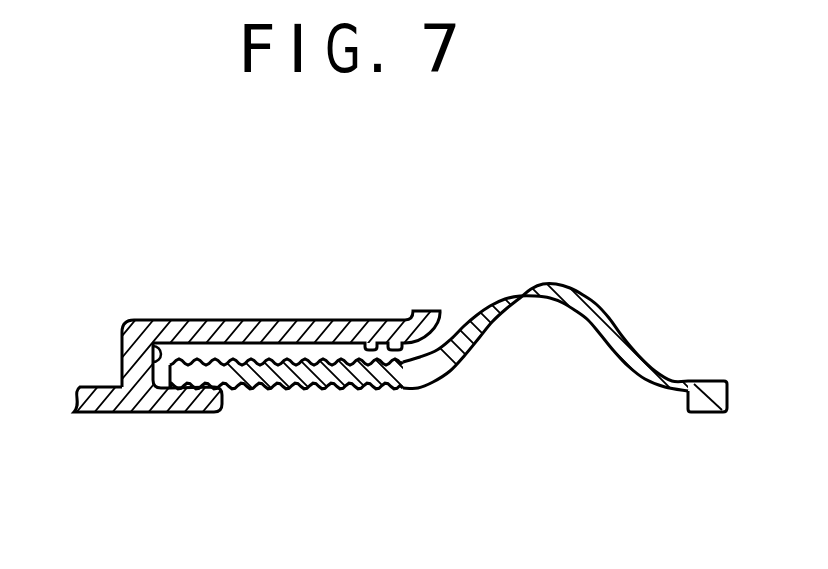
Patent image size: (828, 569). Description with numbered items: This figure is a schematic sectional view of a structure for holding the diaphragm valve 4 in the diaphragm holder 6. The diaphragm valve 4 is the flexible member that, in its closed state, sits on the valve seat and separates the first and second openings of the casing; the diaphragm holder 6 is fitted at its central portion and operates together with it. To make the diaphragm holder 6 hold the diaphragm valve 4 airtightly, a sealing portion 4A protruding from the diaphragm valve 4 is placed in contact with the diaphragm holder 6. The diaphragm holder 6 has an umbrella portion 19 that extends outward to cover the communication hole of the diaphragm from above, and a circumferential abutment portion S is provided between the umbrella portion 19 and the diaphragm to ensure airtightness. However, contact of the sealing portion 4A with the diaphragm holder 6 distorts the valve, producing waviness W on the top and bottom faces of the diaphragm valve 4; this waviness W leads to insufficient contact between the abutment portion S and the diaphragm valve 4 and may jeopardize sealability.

The diaphragm valve 4 is at (332, 364).
The sealing portion 4A is at (132, 320).
The diaphragm holder 6 is at (122, 412).
The umbrella portion 19 is at (320, 325).
The waviness W is at (236, 350).
The abutment portion S is at (412, 352).